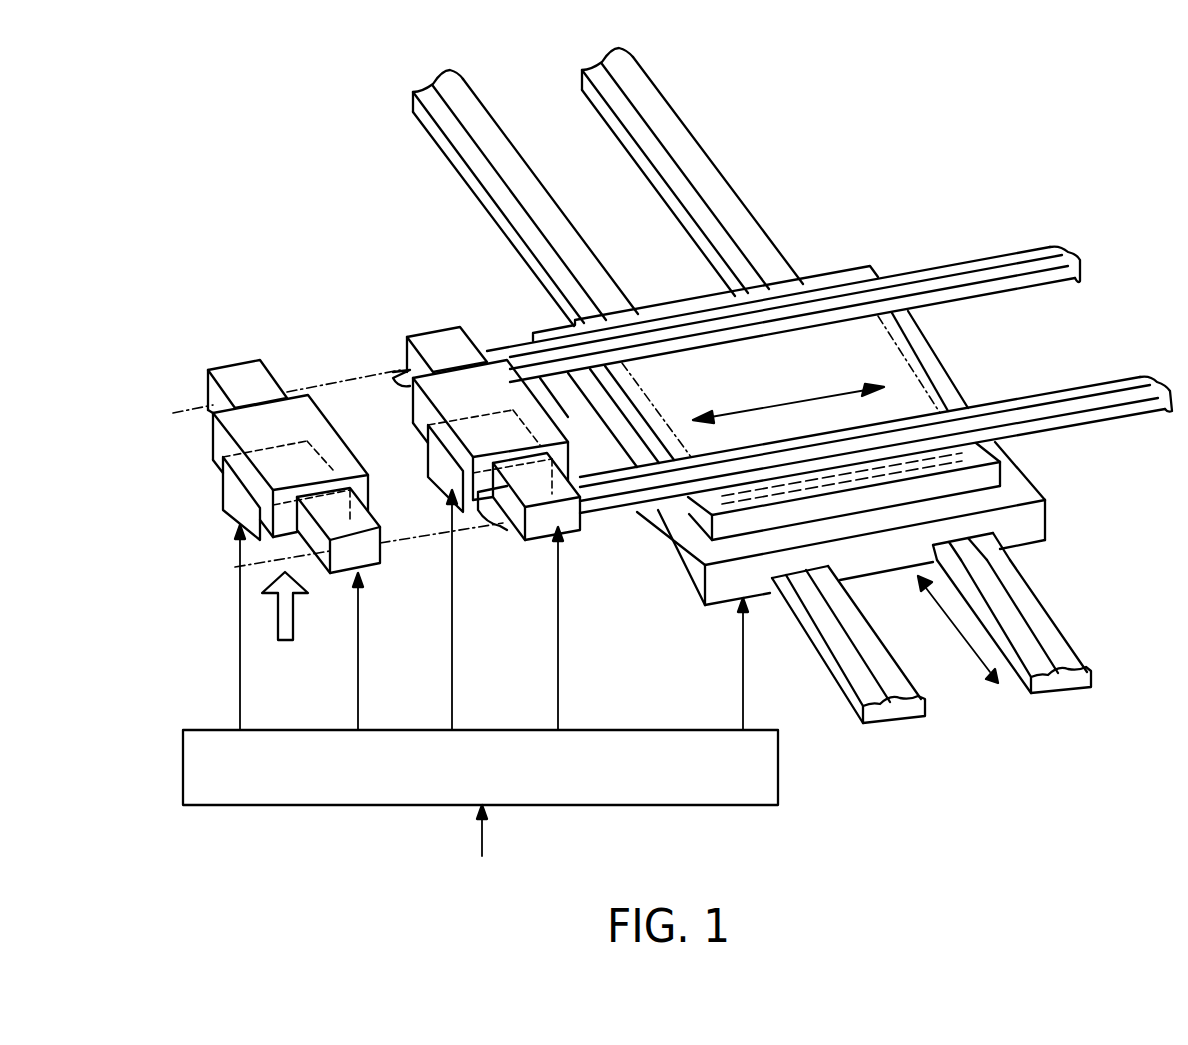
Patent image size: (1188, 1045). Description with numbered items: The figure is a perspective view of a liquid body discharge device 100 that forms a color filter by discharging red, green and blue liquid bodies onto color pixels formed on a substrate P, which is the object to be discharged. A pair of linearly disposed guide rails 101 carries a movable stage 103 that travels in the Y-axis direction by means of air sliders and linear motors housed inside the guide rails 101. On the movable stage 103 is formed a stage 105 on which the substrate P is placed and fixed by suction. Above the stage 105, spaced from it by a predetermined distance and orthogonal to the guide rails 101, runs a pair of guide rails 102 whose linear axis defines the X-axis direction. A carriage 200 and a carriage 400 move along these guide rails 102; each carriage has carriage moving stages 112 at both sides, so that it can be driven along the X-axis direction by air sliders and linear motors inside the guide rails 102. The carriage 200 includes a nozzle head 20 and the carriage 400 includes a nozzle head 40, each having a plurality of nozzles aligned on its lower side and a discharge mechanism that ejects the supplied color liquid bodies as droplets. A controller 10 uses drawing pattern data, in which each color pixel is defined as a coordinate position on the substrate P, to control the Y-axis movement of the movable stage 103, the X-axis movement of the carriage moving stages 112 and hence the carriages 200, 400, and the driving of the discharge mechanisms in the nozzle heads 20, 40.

The liquid body discharge device 100 is at (1139, 97).
The guide rails 101 is at (490, 153).
The guide rails 102 is at (1010, 268).
The movable stage 103 is at (1035, 523).
The stage 105 is at (988, 477).
The substrate P is at (935, 355).
The carriage 200 is at (426, 348).
The carriage 400 is at (262, 425).
The nozzle head 20 is at (440, 452).
The nozzle head 40 is at (232, 504).
The carriage moving stages 112 is at (263, 377).
The controller 10 is at (779, 766).